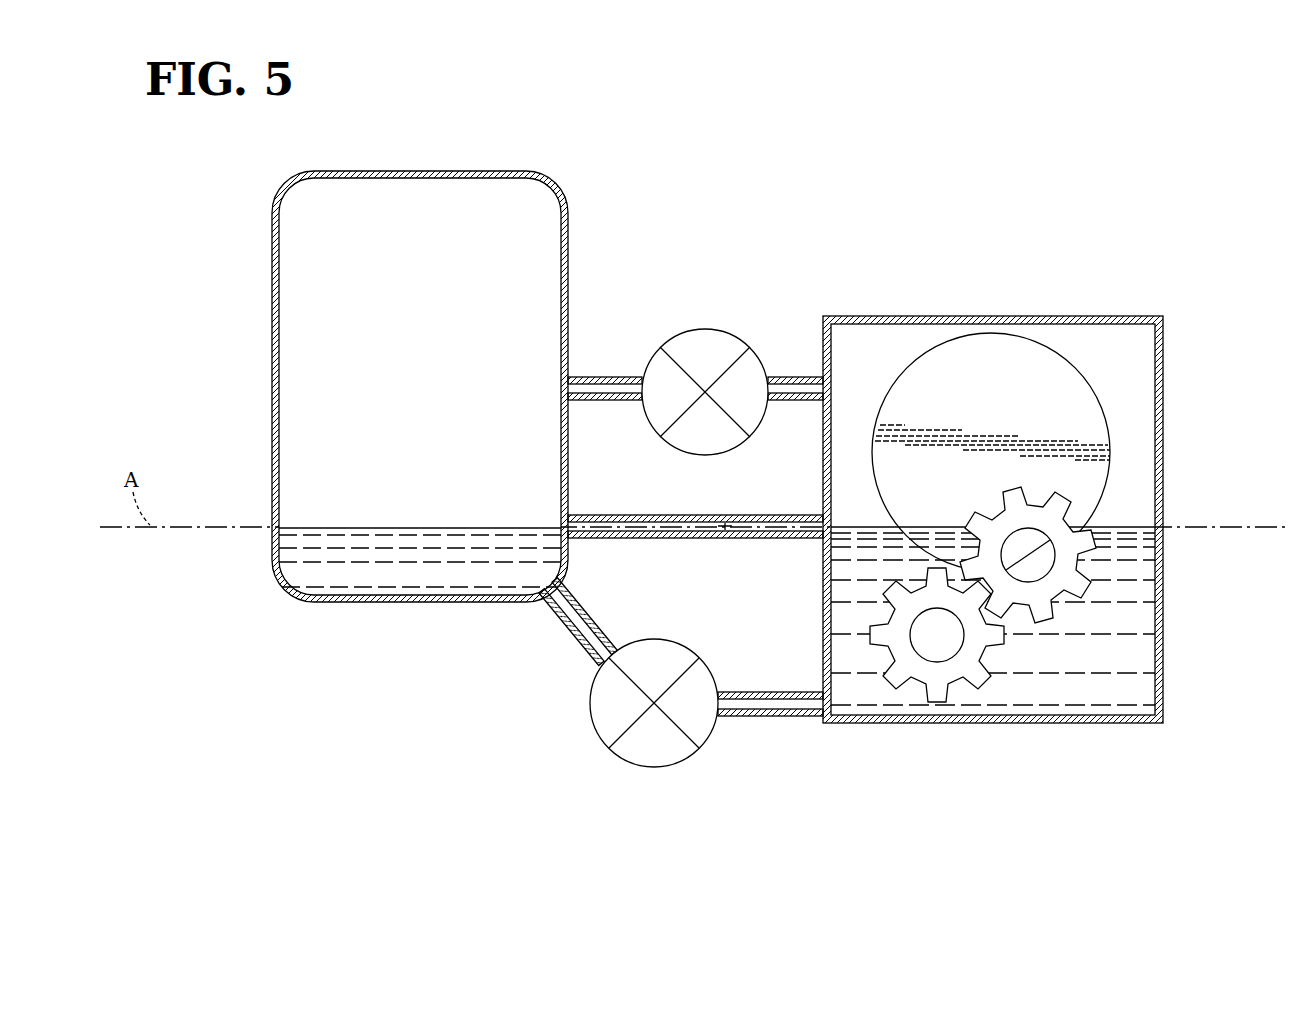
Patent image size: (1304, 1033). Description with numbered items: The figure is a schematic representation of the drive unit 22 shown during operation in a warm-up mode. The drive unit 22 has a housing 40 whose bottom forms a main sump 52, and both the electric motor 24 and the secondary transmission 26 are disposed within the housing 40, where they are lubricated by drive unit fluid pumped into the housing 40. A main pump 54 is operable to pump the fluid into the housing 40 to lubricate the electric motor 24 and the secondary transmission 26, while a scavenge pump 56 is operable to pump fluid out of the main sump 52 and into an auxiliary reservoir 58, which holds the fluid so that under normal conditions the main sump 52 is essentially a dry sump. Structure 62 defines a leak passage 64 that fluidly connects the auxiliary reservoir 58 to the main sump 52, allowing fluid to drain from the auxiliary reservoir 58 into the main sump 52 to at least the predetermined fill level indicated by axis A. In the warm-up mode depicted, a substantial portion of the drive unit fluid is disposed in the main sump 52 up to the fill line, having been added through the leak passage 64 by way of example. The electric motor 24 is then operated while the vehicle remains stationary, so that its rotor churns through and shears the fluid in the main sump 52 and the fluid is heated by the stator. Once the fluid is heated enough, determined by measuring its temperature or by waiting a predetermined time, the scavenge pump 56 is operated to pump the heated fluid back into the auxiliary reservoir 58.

The drive unit 22 is at (1032, 506).
The electric motor 24 is at (940, 373).
The secondary transmission 26 is at (1104, 588).
The housing 40 is at (1166, 345).
The main sump 52 is at (1130, 664).
The main pump 54 is at (705, 328).
The scavenge pump 56 is at (654, 768).
The auxiliary reservoir 58 is at (300, 418).
The structure 62 is at (642, 515).
The leak passage 64 is at (728, 530).